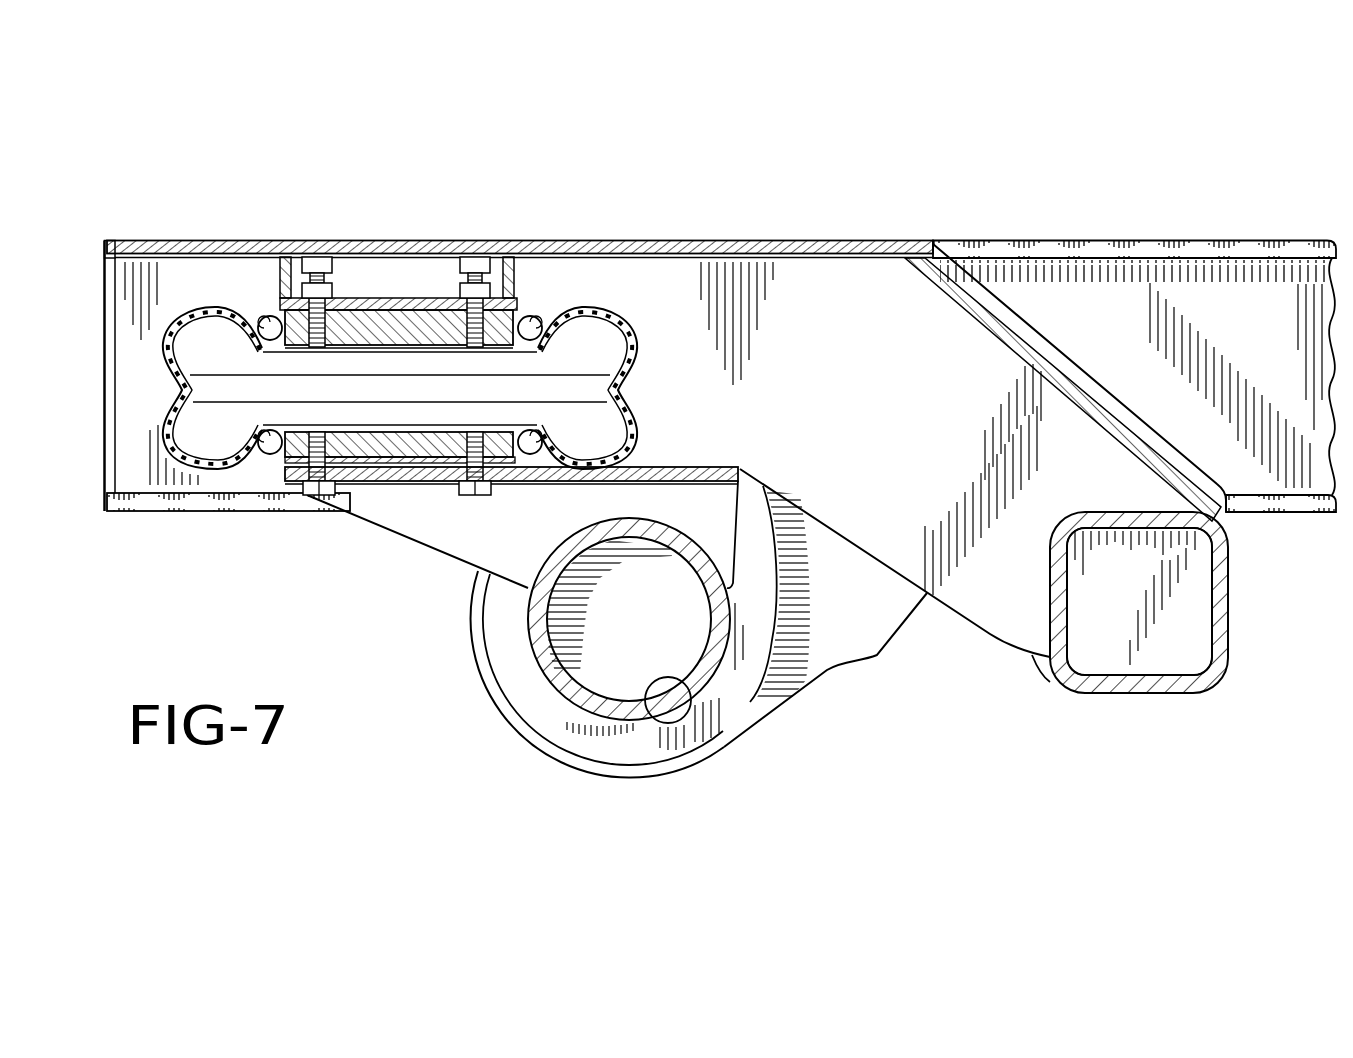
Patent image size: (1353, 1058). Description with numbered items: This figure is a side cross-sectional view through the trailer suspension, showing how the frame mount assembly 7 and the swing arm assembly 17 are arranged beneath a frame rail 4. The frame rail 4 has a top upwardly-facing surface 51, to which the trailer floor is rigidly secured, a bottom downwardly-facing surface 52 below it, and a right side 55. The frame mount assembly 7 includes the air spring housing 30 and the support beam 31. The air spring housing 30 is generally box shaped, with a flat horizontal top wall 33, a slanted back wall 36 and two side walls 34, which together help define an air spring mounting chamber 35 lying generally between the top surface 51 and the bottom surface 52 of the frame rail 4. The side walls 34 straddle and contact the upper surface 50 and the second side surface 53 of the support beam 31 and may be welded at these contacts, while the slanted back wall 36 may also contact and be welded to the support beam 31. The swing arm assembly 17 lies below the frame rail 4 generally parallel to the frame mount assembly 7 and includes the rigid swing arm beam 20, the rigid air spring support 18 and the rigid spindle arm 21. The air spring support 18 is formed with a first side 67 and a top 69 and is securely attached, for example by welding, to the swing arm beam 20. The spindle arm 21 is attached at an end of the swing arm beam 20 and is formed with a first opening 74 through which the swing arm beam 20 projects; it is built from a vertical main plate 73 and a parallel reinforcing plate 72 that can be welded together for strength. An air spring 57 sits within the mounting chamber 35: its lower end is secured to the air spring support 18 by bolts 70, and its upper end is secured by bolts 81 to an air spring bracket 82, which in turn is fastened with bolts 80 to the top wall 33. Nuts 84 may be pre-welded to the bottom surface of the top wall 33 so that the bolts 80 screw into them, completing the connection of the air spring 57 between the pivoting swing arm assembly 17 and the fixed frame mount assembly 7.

The frame rail 4 is at (1187, 238).
The frame mount assembly 7 is at (1198, 707).
The swing arm assembly 17 is at (480, 712).
The air spring support 18 is at (413, 547).
The swing arm beam 20 is at (530, 645).
The spindle arm 21 is at (795, 698).
The air spring housing 30 is at (828, 238).
The support beam 31 is at (1134, 696).
The top wall 33 is at (704, 241).
The side wall 34 is at (146, 376).
The air spring mounting chamber 35 is at (212, 282).
The slanted back wall 36 is at (1093, 402).
The upper surface 50 is at (1128, 512).
The top surface 51 is at (1253, 247).
The bottom surface 52 is at (197, 513).
The second side surface 53 is at (1050, 600).
The right side 55 is at (1067, 252).
The air spring 57 is at (614, 318).
The first side 67 is at (462, 543).
The top 69 is at (667, 468).
The bolt 70 is at (315, 497).
The reinforcing plate 72 is at (582, 740).
The main plate 73 is at (527, 737).
The first opening 74 is at (650, 700).
The bolt 80 is at (327, 277).
The bolt 81 is at (303, 288).
The air spring bracket 82 is at (387, 300).
The nut 84 is at (328, 262).